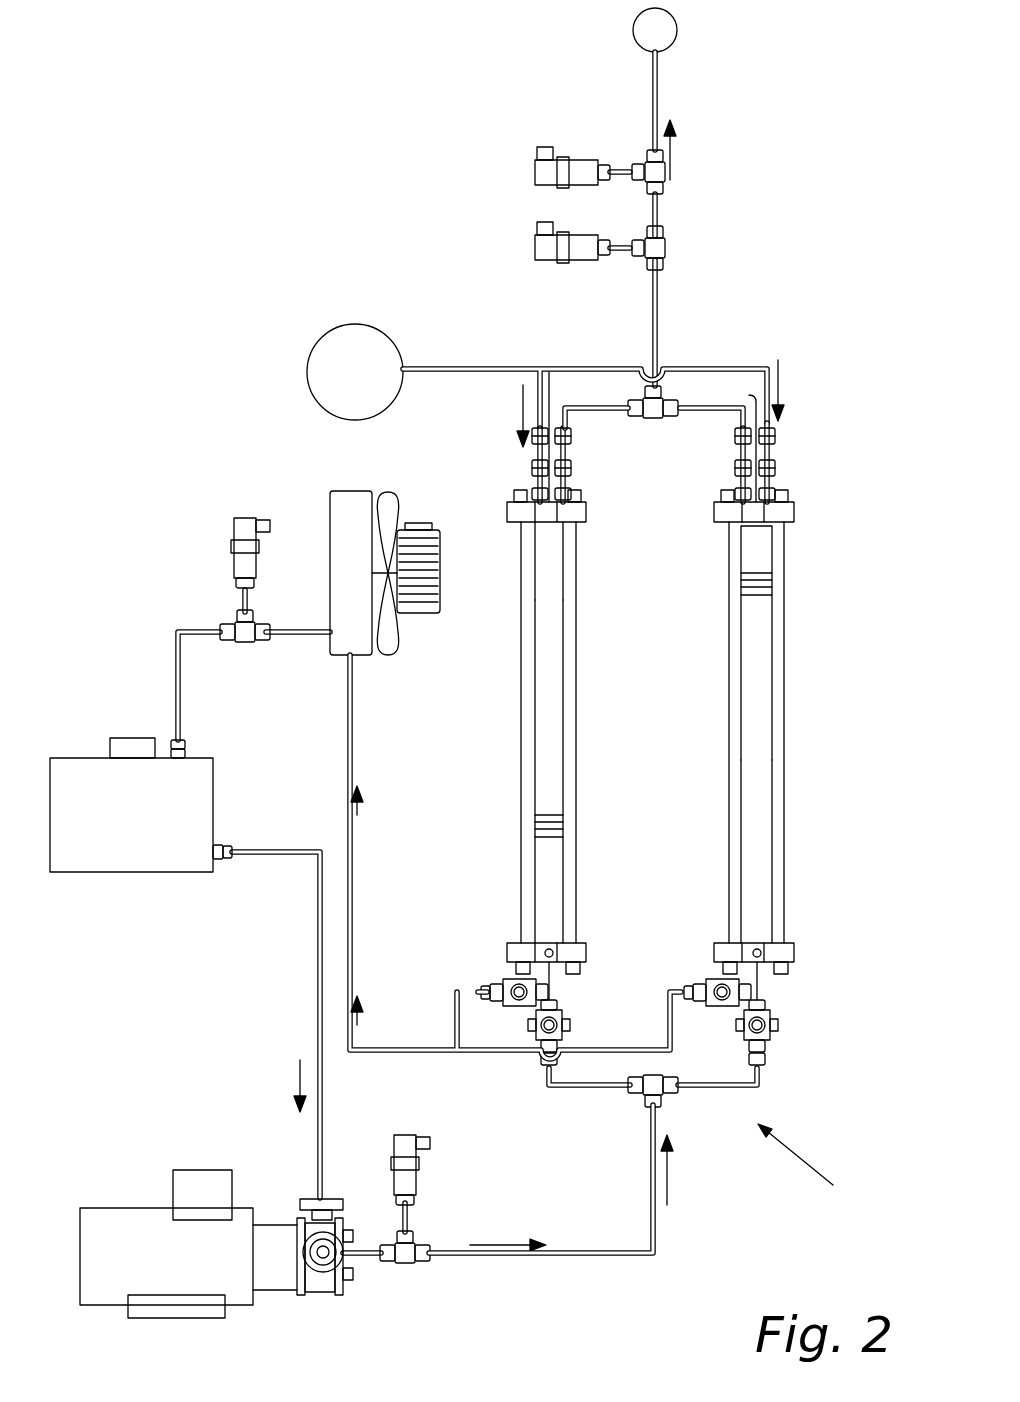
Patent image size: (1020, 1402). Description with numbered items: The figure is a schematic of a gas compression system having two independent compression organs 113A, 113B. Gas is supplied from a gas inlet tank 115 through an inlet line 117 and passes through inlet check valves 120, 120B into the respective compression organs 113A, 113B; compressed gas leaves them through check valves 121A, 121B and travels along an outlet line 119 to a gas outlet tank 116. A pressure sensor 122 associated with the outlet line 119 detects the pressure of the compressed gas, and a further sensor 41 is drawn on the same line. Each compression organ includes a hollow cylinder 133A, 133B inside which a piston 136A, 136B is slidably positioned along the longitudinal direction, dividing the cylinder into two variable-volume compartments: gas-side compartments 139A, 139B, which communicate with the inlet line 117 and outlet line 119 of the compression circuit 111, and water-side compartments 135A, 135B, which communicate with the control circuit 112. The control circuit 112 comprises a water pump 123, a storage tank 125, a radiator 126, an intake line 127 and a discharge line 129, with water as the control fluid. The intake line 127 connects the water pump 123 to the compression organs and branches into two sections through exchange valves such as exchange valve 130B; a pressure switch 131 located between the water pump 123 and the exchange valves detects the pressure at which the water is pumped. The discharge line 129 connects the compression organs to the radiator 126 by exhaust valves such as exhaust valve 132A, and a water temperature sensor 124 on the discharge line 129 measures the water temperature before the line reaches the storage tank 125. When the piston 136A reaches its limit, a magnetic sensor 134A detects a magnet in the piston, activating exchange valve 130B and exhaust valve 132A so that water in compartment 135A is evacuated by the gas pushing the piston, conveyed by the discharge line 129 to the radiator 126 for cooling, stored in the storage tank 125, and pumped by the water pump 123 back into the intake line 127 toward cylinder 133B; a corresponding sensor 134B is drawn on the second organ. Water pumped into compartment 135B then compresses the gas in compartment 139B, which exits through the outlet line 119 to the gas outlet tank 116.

The sensor 41 is at (545, 243).
The compression circuit 111 is at (660, 270).
The control circuit 112 is at (818, 1164).
The compression organ 113A is at (578, 732).
The compression organ 113B is at (783, 600).
The gas inlet tank 115 is at (320, 355).
The gas outlet tank 116 is at (678, 30).
The inlet line 117 is at (517, 367).
The outlet line 119 is at (650, 130).
The inlet check valve 120 is at (538, 467).
The inlet check valve 120B is at (772, 468).
The check valve 121A is at (575, 455).
The check valve 121B is at (742, 455).
The pressure sensor 122 is at (547, 178).
The water pump 123 is at (253, 1305).
The water temperature sensor 124 is at (238, 540).
The storage tank 125 is at (134, 863).
The radiator 126 is at (345, 492).
The intake line 127 is at (653, 1237).
The discharge line 129 is at (412, 1045).
The exchange valve 130B is at (707, 980).
The pressure switch 131 is at (408, 1140).
The exhaust valve 132A is at (503, 987).
The hollow cylinder 133A is at (547, 715).
The hollow cylinder 133B is at (760, 808).
The magnetic sensor 134A is at (549, 455).
The second inner line 134B is at (757, 445).
The compartment 135A is at (547, 877).
The compartment 135B is at (758, 680).
The piston 136A is at (538, 823).
The piston 136B is at (743, 590).
The compartment 139A is at (550, 602).
The compartment 139B is at (750, 555).